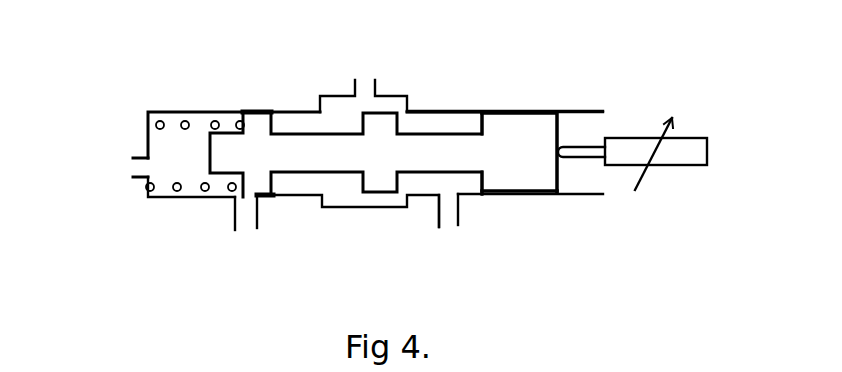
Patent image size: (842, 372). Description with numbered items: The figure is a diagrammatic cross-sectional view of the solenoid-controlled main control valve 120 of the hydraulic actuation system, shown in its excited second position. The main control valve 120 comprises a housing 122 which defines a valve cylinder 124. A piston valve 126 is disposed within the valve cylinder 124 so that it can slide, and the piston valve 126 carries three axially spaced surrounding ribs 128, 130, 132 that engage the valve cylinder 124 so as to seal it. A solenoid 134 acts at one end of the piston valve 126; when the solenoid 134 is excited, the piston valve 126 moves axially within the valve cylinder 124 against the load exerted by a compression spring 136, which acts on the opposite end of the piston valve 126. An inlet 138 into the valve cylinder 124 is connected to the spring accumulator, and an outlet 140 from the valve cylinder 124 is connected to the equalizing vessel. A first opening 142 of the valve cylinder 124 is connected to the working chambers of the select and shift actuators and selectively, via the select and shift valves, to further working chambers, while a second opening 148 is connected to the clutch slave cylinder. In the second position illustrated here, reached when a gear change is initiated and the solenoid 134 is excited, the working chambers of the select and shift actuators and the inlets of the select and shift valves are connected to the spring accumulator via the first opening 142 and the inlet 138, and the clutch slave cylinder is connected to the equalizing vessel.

The main control valve 120 is at (550, 110).
The housing 122 is at (540, 198).
The valve cylinder 124 is at (443, 118).
The piston valve 126 is at (558, 178).
The surrounding rib 128 is at (543, 132).
The surrounding rib 130 is at (378, 184).
The surrounding rib 132 is at (258, 127).
The solenoid 134 is at (667, 157).
The compression spring 136 is at (175, 112).
The inlet 138 is at (367, 82).
The outlet 140 is at (135, 158).
The first opening 142 is at (453, 212).
The second opening 148 is at (250, 213).